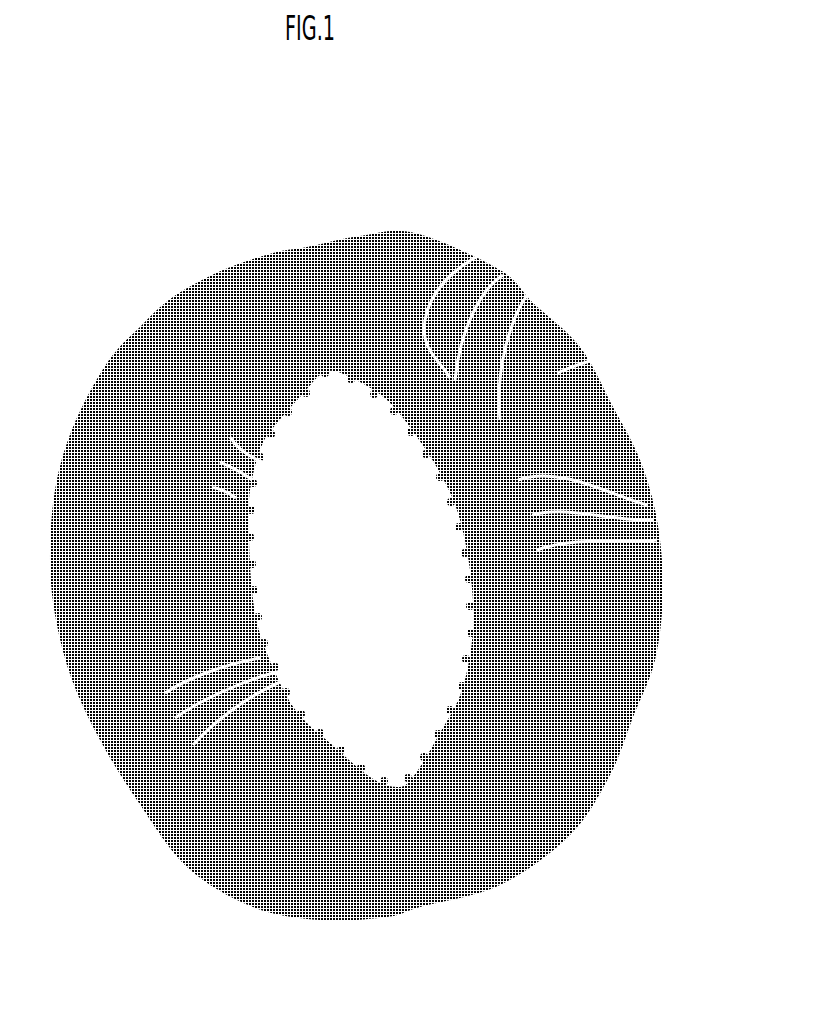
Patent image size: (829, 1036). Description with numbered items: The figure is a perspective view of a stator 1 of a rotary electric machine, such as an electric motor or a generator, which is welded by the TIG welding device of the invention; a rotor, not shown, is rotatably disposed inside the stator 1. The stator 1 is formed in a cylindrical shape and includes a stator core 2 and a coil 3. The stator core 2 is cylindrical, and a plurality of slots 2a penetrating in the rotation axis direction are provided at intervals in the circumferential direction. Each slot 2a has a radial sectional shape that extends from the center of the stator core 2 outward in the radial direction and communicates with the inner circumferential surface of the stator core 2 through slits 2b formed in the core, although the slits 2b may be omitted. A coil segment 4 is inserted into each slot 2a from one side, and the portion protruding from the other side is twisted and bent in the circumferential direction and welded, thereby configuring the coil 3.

The stator 1 is at (387, 527).
The stator core 2 is at (590, 361).
The slots 2a is at (657, 540).
The slits 2b is at (235, 497).
The coil 3 is at (290, 277).
The coil segment 4 is at (527, 295).